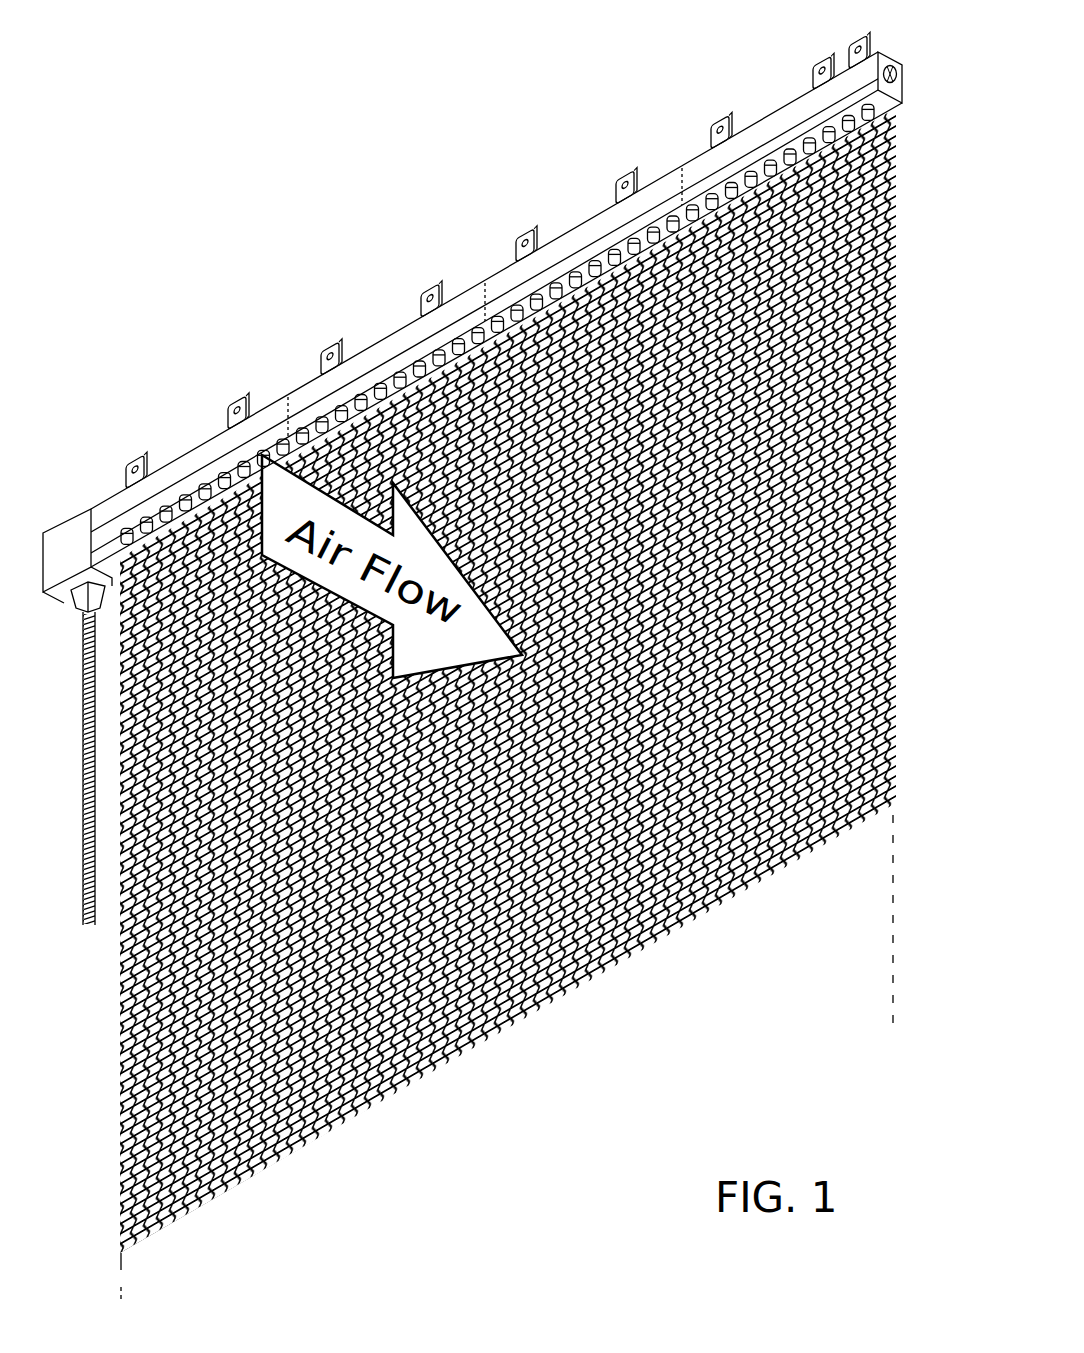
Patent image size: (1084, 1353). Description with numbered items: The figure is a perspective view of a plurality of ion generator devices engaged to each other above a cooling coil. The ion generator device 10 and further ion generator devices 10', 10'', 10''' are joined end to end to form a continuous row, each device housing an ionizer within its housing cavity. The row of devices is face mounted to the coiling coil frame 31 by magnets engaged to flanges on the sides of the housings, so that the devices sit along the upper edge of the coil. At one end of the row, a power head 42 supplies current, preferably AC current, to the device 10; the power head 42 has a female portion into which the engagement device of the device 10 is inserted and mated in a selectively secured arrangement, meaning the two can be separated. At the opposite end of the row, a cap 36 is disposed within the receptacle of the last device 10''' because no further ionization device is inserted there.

The ion generator device 10 is at (189, 474).
The ion generator device 10' is at (386, 359).
The ion generator device 10'' is at (583, 254).
The ion generator device 10''' is at (792, 140).
The coiling coil frame 31 is at (877, 193).
The cap 36 is at (893, 68).
The power head 42 is at (63, 533).